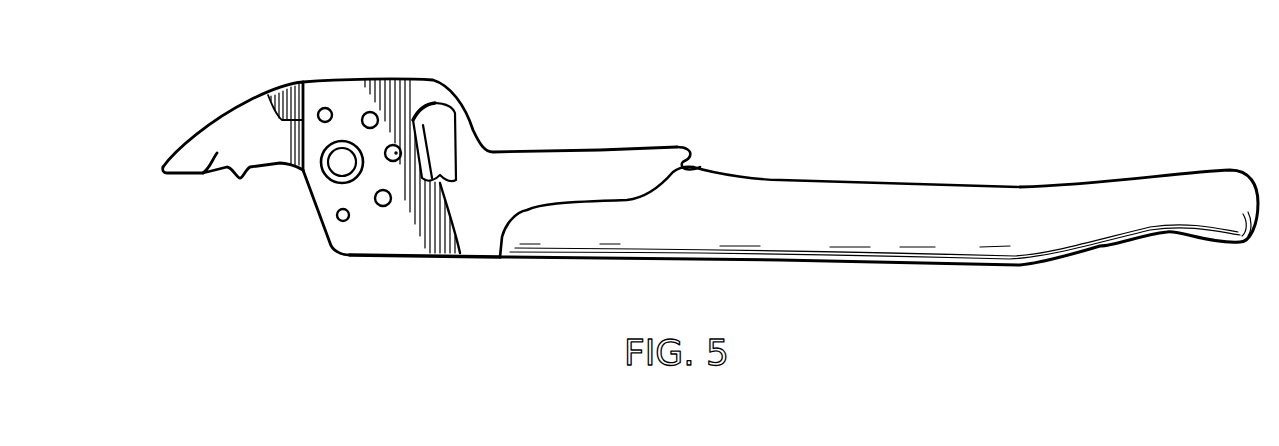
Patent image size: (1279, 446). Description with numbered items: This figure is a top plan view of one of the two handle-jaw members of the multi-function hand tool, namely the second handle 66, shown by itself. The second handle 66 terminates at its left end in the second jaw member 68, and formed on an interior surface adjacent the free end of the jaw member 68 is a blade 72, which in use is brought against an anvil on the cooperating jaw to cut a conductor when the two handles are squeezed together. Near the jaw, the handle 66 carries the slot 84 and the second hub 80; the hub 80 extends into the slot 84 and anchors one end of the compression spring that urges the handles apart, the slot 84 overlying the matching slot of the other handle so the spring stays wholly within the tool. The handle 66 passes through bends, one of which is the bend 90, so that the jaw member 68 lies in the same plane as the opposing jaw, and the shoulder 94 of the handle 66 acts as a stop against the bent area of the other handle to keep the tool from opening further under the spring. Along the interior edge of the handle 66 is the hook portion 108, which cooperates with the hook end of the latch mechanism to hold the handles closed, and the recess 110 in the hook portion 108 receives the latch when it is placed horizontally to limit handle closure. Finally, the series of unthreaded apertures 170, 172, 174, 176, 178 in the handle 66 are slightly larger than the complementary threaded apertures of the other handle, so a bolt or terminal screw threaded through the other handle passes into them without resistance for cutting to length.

The second handle 66 is at (1020, 210).
The second jaw member 68 is at (203, 178).
The blade 72 is at (177, 177).
The second hub 80 is at (467, 255).
The slot 84 is at (421, 104).
The bend 90 is at (274, 107).
The shoulder 94 is at (313, 208).
The hook portion 108 is at (703, 157).
The recess 110 is at (690, 147).
The aperture 170 is at (343, 221).
The aperture 172 is at (388, 206).
The aperture 174 is at (395, 145).
The aperture 176 is at (363, 118).
The aperture 178 is at (318, 114).